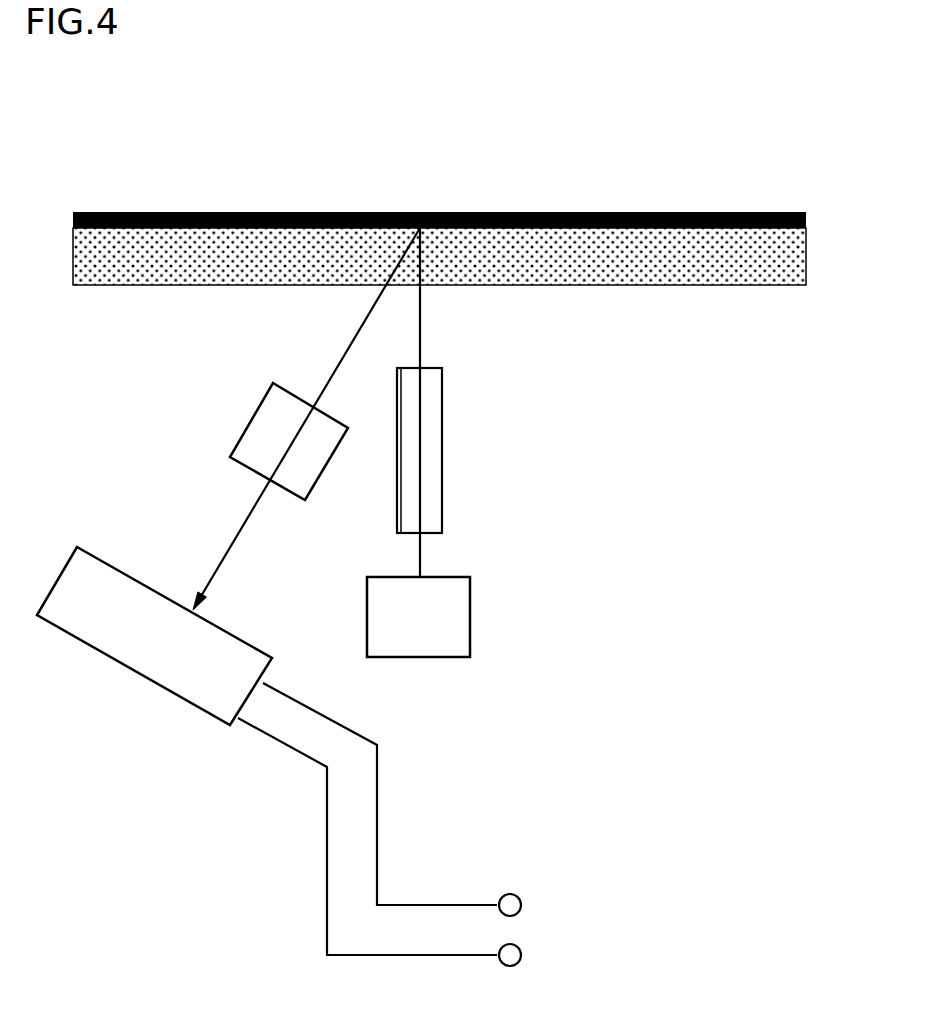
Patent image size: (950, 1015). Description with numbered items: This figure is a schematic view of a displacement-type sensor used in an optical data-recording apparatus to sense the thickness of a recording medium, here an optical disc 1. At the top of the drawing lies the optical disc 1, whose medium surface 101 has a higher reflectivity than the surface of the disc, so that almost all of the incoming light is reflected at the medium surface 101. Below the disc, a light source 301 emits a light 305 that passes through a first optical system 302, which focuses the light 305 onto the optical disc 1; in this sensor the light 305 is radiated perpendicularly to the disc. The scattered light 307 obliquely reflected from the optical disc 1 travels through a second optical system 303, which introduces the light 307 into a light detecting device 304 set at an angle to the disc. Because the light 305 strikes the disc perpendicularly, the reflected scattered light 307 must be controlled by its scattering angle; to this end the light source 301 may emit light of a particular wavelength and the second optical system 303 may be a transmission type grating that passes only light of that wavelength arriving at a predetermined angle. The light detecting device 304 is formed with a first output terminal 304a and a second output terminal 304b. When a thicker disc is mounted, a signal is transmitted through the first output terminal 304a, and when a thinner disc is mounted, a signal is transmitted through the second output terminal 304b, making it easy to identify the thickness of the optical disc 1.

The optical disc 1 is at (816, 214).
The medium surface 101 is at (642, 212).
The light source 301 is at (470, 628).
The first optical system 302 is at (442, 490).
The second optical system 303 is at (240, 440).
The light detecting device 304 is at (137, 675).
The first output terminal 304a is at (431, 803).
The second output terminal 304b is at (418, 845).
The light 305 is at (420, 312).
The light 307 is at (257, 510).